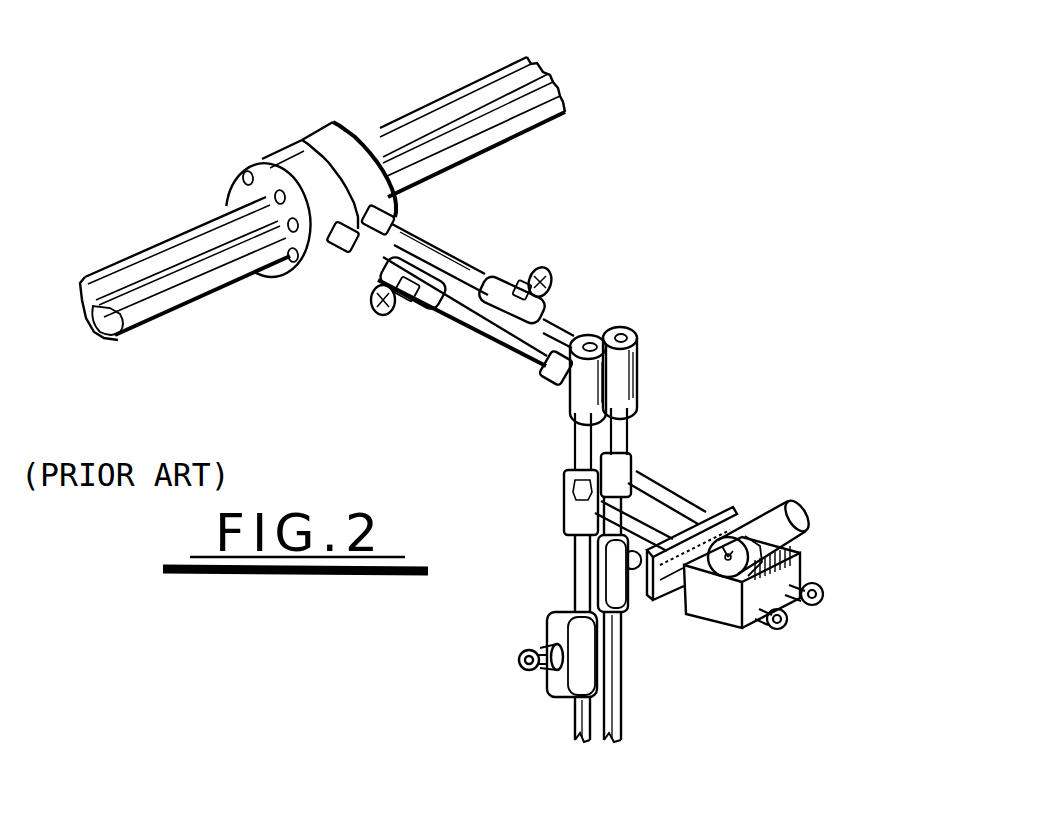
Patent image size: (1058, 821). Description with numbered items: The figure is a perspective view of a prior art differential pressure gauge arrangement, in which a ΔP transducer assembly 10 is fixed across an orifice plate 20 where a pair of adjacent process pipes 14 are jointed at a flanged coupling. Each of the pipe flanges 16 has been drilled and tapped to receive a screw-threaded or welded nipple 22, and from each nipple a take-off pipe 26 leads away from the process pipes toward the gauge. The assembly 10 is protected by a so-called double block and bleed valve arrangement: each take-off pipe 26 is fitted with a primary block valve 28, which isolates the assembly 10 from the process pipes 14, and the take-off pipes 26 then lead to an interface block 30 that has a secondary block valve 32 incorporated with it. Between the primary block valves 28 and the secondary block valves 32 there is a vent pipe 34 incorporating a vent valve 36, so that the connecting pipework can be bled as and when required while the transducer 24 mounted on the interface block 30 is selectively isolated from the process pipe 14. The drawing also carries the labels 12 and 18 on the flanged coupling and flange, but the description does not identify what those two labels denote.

The ΔP transducer assembly 10 is at (710, 445).
The prior art rail assembly 12 is at (268, 115).
The process pipes 14 is at (507, 102).
The pipe flanges 16 is at (363, 137).
The flange with holes 18 is at (247, 177).
The orifice plate 20 is at (300, 140).
The nipple 22 is at (395, 220).
The transducer 24 is at (787, 523).
The take-off pipes 26 is at (457, 250).
The primary block valve 28 is at (513, 278).
The interface block 30 is at (720, 598).
The secondary block valve 32 is at (822, 585).
The vent pipe 34 is at (582, 712).
The vent valve 36 is at (613, 583).